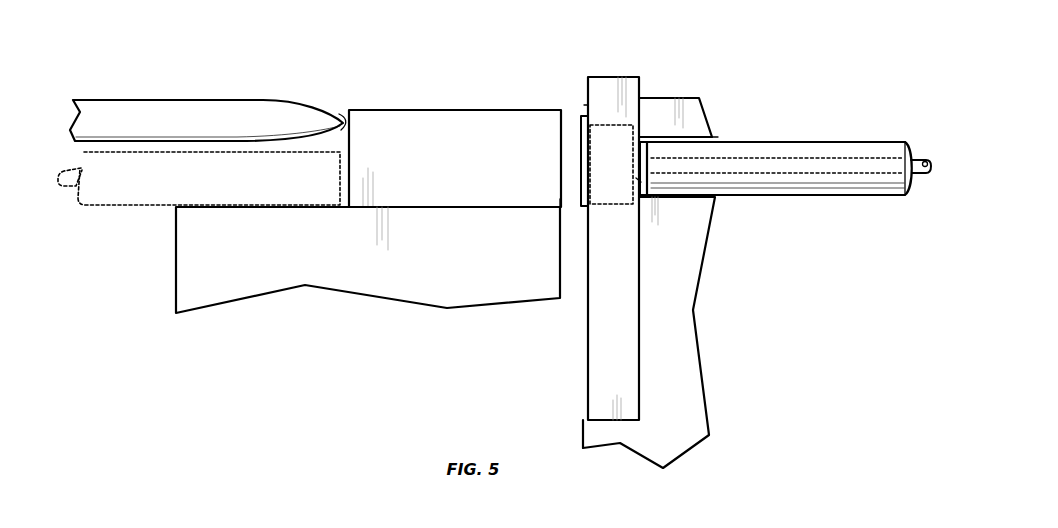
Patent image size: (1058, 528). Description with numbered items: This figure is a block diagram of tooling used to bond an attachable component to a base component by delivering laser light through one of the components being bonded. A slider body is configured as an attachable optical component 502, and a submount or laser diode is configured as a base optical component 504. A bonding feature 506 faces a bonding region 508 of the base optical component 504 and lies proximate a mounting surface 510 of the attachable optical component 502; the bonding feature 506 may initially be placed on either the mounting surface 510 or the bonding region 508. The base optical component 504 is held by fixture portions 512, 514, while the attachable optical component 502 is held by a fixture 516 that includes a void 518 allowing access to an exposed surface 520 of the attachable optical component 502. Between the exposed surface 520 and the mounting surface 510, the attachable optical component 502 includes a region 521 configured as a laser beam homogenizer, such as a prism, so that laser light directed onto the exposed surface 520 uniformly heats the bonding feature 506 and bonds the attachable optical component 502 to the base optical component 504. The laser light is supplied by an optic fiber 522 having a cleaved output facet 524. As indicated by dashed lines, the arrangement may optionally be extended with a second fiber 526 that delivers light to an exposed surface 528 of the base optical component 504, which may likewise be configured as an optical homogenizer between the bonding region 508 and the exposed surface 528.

The attachable optical component 502 is at (615, 76).
The base optical component 504 is at (472, 108).
The bonding feature 506 is at (580, 132).
The bonding region 508 is at (560, 208).
The mounting surface 510 is at (586, 105).
The fixture portion 512 is at (435, 300).
The fixture portion 514 is at (210, 104).
The fixture 516 is at (692, 368).
The void 518 is at (718, 136).
The exposed surface 520 is at (642, 140).
The region 521 is at (611, 164).
The optic fiber 522 is at (807, 187).
The cleaved output facet 524 is at (641, 182).
The second fiber 526 is at (127, 206).
The exposed surface 528 is at (343, 120).